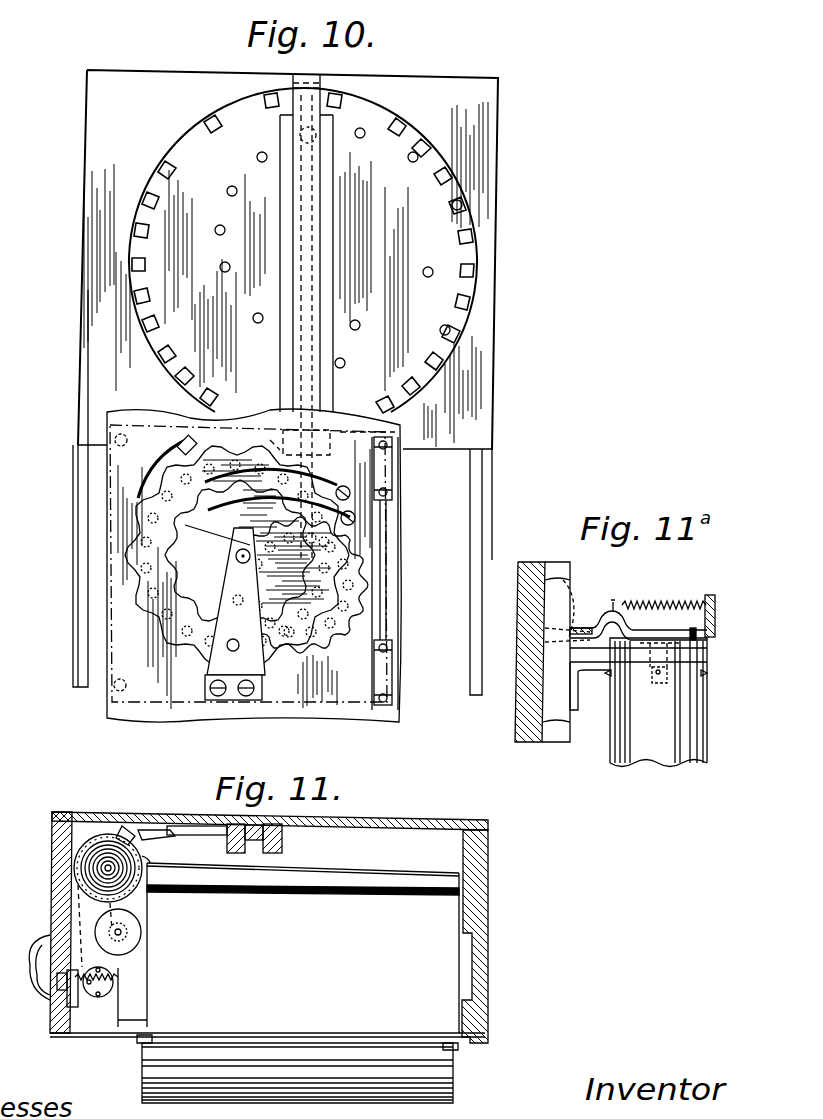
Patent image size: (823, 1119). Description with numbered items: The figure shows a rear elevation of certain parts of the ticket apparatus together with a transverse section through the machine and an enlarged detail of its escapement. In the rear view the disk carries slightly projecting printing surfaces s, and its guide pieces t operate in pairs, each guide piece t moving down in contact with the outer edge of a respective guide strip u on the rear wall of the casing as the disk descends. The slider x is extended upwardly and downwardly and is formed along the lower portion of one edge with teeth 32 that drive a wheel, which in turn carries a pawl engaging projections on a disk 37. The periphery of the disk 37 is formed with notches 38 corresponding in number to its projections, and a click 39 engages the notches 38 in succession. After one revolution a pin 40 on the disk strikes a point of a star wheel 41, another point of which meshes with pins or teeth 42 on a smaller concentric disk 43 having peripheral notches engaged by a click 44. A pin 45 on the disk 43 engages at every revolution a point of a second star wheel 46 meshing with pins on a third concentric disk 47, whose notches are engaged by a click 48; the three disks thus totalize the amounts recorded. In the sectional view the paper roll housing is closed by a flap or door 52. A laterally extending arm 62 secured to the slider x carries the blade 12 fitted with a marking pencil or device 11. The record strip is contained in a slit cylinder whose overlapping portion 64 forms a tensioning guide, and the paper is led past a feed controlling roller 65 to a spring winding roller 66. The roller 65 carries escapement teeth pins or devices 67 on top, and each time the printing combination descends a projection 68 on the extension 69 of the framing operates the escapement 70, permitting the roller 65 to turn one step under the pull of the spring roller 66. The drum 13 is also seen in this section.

In FIG. 10, the guide pieces t is at (333, 96).
In FIG. 10, the guide strip u is at (265, 326).
In FIG. 10, the printing surfaces s is at (128, 270).
In FIG. 10, the click 39 is at (167, 466).
In FIG. 10, the pin 40 is at (128, 515).
In FIG. 10, the notches 38 is at (132, 523).
In FIG. 10, the disk 37 is at (130, 562).
In FIG. 10, the concentric disk 43 is at (200, 555).
In FIG. 10, the third concentric disk 47 is at (190, 560).
In FIG. 10, the star wheel 46 is at (216, 687).
In FIG. 10, the star wheel 41 is at (250, 665).
In FIG. 10, the pins or teeth 42 is at (300, 586).
In FIG. 10, the pin 45 is at (300, 596).
In FIG. 10, the teeth 32 is at (385, 542).
In FIG. 10, the click 48 is at (357, 508).
In FIG. 10, the click 44 is at (320, 478).
In FIG. 11A, the extension of the framing 69 is at (528, 580).
In FIG. 11A, the projection 68 is at (577, 583).
In FIG. 11A, the escapement 70 is at (602, 615).
In FIG. 11A, the feed controlling roller 65 is at (707, 698).
In FIG. 11, the feed controlling roller 65 is at (88, 1000).
In FIG. 11, the slider x is at (270, 822).
In FIG. 11, the laterally extending arm 62 is at (217, 838).
In FIG. 11, the coil drum 13 is at (85, 852).
In FIG. 11, the blade 12 is at (120, 828).
In FIG. 11, the marking pencil or device 11 is at (167, 838).
In FIG. 11, the overlapping portion 64 is at (150, 858).
In FIG. 11, the spring winding roller 66 is at (142, 940).
In FIG. 11, the escapement teeth pins or devices 67 is at (108, 1000).
In FIG. 11, the flap or door 52 is at (267, 950).